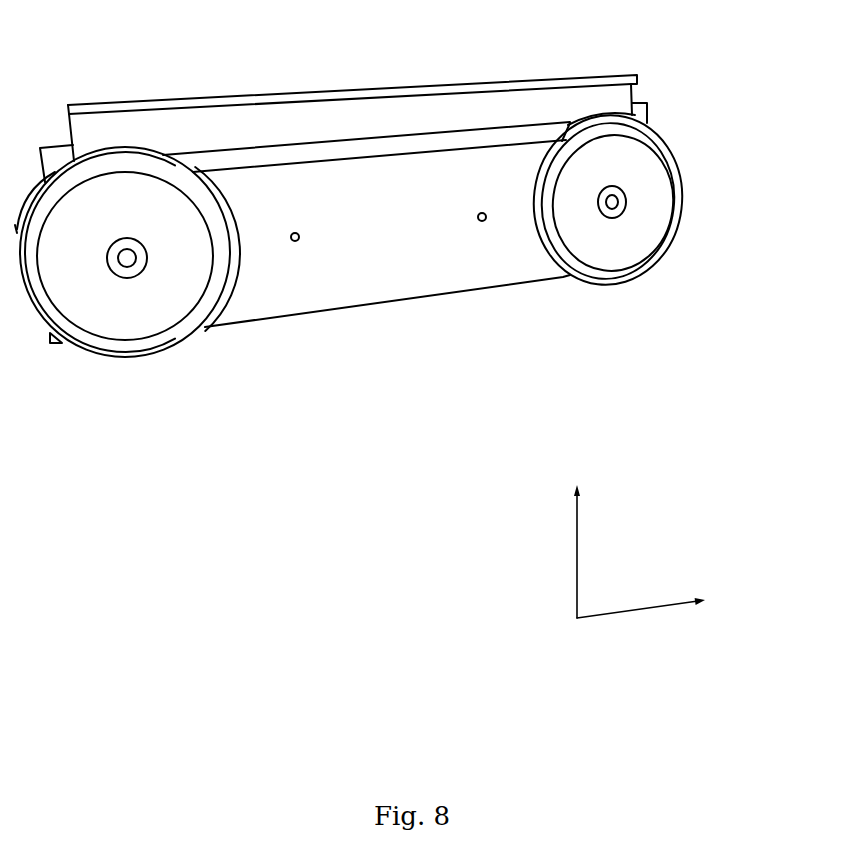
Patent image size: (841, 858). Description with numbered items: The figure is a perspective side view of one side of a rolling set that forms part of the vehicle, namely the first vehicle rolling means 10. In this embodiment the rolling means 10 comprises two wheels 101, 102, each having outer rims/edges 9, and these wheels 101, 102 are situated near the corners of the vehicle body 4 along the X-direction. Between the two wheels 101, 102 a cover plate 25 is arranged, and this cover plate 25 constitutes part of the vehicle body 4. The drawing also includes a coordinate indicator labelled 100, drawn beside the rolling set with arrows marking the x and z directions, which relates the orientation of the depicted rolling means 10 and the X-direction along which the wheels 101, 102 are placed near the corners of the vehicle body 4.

The vehicle body 4 is at (397, 112).
The outer rims/edges 9 is at (658, 142).
The first vehicle rolling means 10 is at (698, 196).
The cover plate 25 is at (374, 235).
The coordinate system 100 is at (525, 520).
The wheel 101 is at (625, 240).
The wheel 102 is at (102, 320).